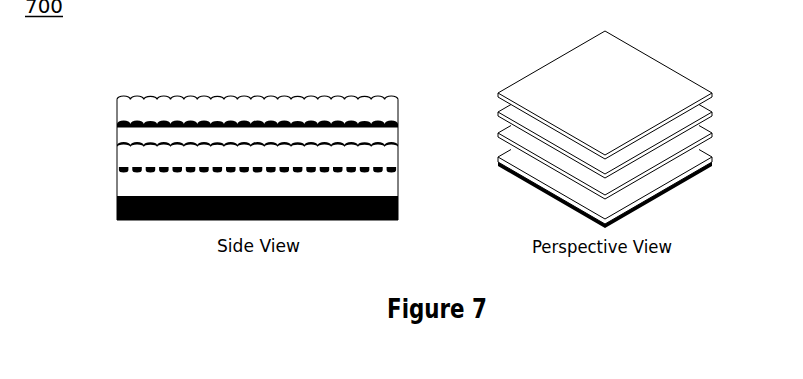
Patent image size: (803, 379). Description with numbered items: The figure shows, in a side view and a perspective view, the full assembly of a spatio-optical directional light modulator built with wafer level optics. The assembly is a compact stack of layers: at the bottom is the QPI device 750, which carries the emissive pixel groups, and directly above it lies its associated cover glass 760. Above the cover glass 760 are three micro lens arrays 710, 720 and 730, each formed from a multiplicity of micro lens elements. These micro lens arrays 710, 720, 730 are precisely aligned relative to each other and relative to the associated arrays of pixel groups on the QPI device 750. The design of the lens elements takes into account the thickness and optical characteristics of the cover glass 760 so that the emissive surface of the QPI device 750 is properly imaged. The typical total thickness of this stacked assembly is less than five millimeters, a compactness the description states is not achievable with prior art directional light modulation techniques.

The micro lens array 730 is at (494, 100).
The micro lens array 720 is at (494, 124).
The micro lens array 710 is at (494, 150).
The cover glass 760 is at (494, 175).
The QPI device 750 is at (504, 185).